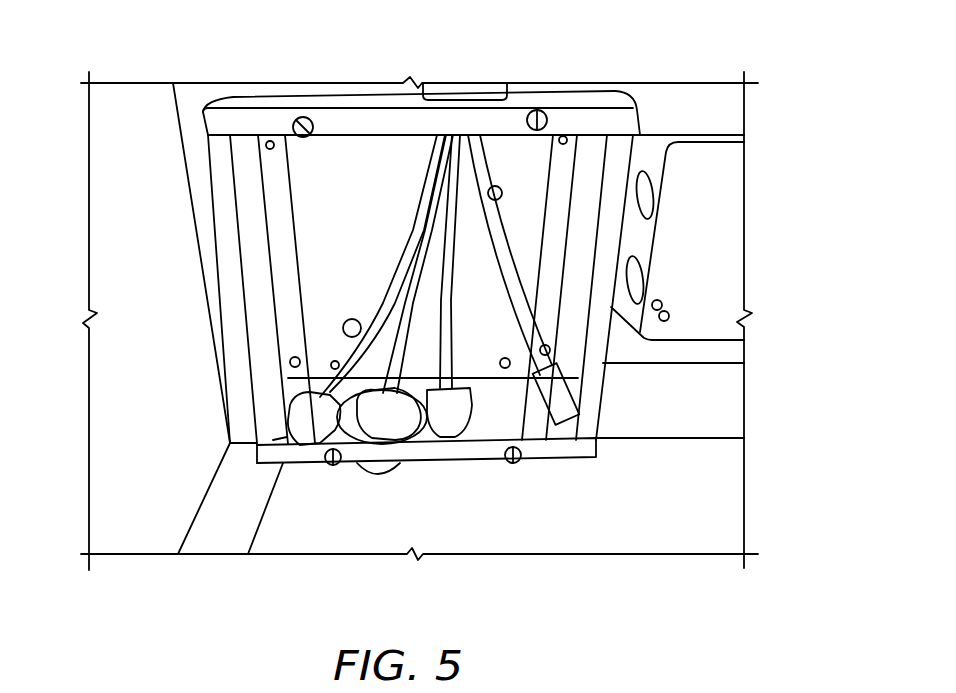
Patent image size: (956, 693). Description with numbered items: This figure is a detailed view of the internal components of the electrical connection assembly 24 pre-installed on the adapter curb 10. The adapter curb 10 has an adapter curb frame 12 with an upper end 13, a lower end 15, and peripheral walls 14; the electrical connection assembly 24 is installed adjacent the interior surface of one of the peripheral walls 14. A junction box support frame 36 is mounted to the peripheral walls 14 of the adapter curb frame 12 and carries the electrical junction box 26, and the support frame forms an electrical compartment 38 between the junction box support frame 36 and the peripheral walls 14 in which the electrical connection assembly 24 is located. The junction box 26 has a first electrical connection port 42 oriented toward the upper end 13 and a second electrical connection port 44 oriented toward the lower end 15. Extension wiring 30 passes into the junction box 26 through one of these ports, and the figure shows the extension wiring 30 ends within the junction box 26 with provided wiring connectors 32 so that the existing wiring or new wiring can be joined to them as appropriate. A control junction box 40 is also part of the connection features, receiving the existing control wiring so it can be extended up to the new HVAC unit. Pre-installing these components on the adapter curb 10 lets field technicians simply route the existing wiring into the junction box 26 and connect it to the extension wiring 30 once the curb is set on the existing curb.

The adapter curb 10 is at (786, 111).
The adapter curb frame 12 is at (110, 356).
The upper end 13 is at (124, 79).
The peripheral walls 14 is at (110, 457).
The lower end 15 is at (170, 583).
The electrical connection assembly 24 is at (262, 79).
The electrical junction box 26 is at (640, 113).
The extension wiring 30 is at (422, 188).
The wiring connectors 32 is at (390, 452).
The junction box support frame 36 is at (722, 392).
The electrical compartment 38 is at (168, 145).
The control junction box 40 is at (722, 250).
The first electrical connection port 42 is at (467, 88).
The second electrical connection port 44 is at (385, 473).